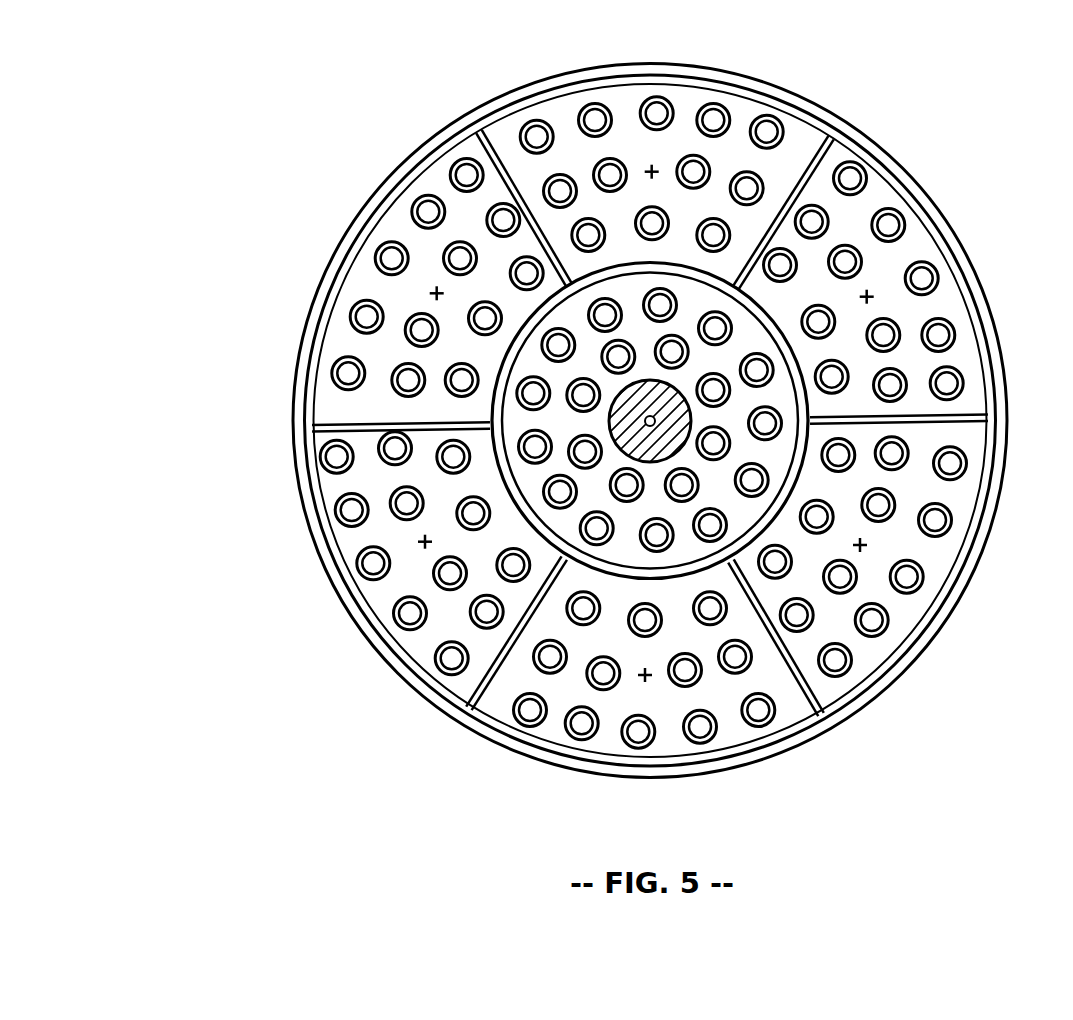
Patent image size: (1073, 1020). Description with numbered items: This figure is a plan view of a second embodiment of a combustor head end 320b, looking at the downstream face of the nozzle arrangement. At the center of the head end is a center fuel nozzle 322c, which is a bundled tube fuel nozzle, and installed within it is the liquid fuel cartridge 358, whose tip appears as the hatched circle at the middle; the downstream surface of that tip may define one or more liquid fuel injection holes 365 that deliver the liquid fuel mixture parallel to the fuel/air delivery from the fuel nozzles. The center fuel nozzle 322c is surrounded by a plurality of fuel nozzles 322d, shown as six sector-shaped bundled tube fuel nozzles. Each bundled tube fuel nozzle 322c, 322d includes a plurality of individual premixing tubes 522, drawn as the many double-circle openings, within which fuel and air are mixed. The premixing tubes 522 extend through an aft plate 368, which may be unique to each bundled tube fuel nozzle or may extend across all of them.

The combustor head end 320b is at (254, 155).
The center fuel nozzle 322c is at (712, 553).
The fuel nozzles 322d is at (806, 132).
The liquid fuel cartridge 358 is at (600, 426).
The liquid fuel injection holes 365 is at (648, 420).
The aft plate 368 is at (897, 250).
The premixing tubes 522 is at (572, 742).